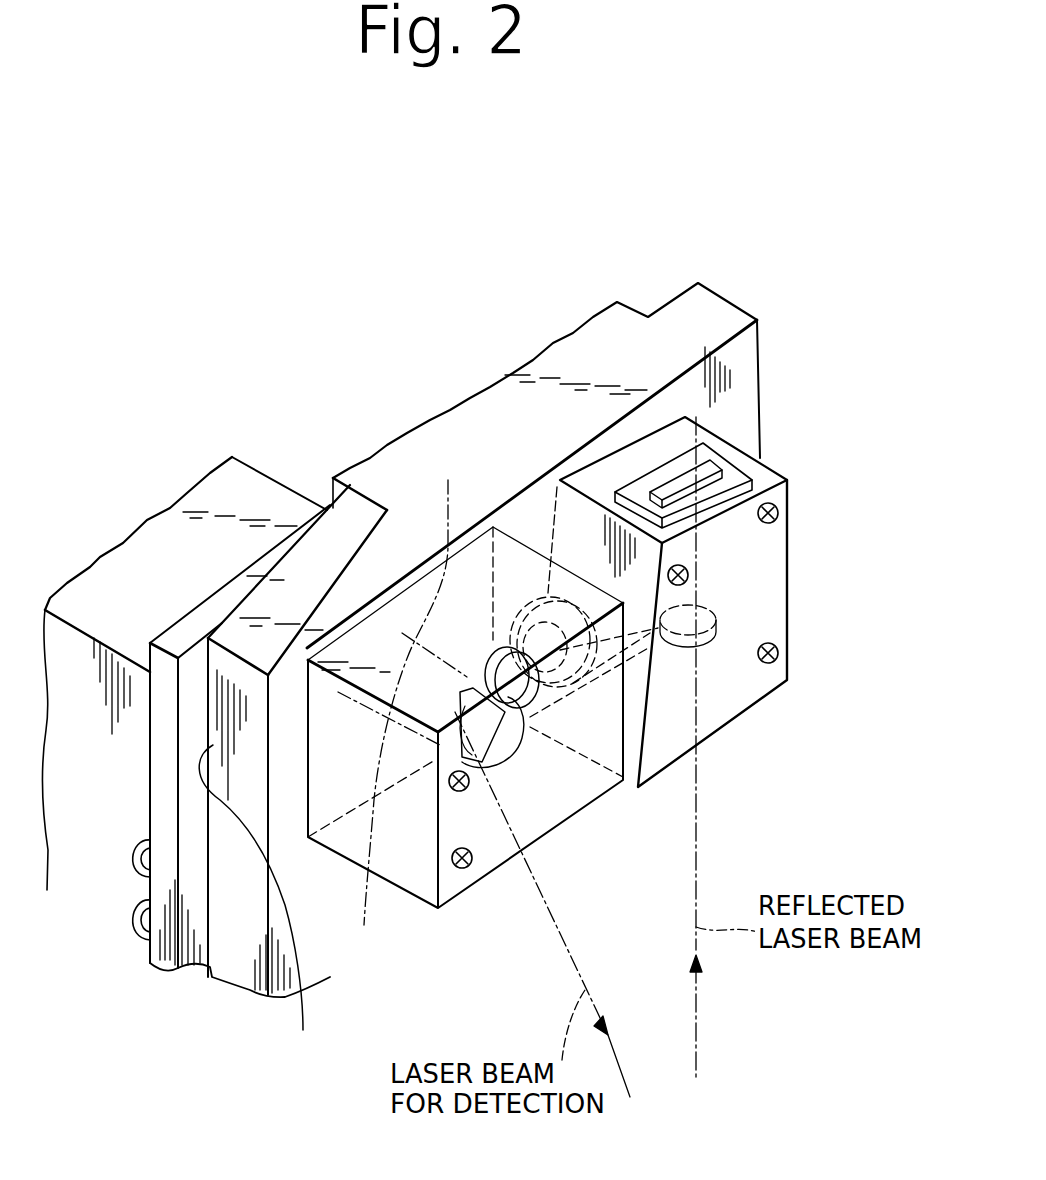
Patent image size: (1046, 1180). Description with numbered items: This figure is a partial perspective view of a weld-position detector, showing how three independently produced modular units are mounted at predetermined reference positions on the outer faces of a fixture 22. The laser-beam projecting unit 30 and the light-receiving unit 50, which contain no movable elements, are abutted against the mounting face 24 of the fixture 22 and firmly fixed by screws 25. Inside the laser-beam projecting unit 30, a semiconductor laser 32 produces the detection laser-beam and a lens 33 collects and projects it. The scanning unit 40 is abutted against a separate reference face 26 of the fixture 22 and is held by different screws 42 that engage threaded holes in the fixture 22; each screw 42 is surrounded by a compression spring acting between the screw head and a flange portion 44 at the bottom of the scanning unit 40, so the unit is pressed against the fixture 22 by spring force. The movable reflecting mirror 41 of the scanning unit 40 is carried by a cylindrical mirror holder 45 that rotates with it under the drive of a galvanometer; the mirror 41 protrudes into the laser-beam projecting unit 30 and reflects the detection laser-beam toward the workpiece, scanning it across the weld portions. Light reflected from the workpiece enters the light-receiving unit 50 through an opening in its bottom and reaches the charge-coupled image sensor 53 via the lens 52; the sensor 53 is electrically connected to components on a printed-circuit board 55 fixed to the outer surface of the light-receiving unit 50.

The fixture 22 is at (628, 350).
The mounting face 24 is at (745, 360).
The screws 25 is at (778, 514).
The reference face 26 is at (260, 910).
The laser-beam projecting unit 30 is at (408, 880).
The semiconductor laser 32 is at (505, 695).
The lens 33 is at (548, 775).
The scanning unit 40 is at (255, 492).
The mirror 41 is at (405, 882).
The screws 42 is at (133, 878).
The flange portion 44 is at (155, 745).
The mirror holder 45 is at (447, 480).
The light-receiving unit 50 is at (777, 587).
The lens 52 is at (717, 640).
The charge-coupled image sensor 53 is at (657, 500).
The printed-circuit board 55 is at (707, 452).